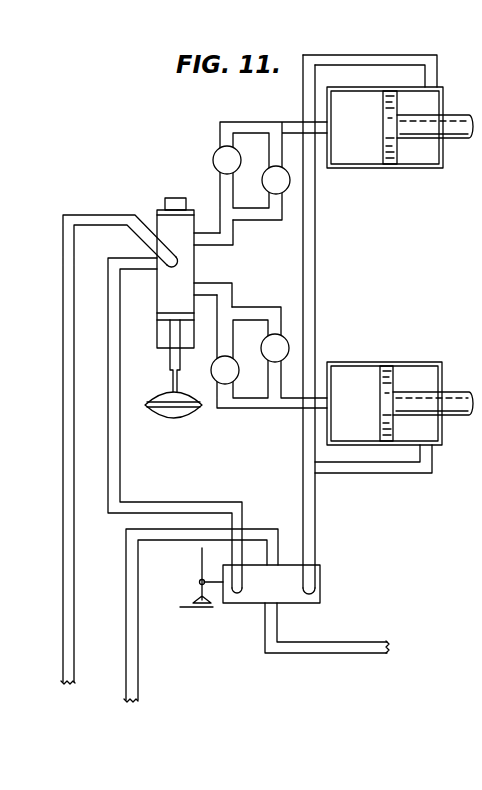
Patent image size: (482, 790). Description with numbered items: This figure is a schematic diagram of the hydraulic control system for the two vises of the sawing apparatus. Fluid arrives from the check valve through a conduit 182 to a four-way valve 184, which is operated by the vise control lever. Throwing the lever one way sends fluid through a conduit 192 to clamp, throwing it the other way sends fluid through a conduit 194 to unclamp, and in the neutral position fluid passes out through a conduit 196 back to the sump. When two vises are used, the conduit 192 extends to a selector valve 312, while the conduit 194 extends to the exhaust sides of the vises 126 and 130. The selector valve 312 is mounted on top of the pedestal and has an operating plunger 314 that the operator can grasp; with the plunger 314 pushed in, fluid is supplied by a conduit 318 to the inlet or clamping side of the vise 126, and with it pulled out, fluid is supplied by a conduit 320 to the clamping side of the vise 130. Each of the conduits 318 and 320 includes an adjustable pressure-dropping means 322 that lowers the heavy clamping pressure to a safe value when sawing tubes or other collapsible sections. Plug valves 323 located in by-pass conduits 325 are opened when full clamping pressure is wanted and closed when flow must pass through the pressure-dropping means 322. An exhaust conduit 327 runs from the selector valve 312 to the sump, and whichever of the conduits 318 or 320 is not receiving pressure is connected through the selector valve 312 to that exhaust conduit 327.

The vise 126 is at (420, 155).
The vise 130 is at (415, 377).
The conduit 182 is at (334, 652).
The four-way valve 184 is at (308, 594).
The conduit 192 is at (242, 515).
The conduit 194 is at (308, 512).
The conduit 196 is at (138, 691).
The selector valve 312 is at (186, 277).
The operating plunger 314 is at (180, 415).
The conduit 318 is at (257, 124).
The conduit 320 is at (289, 401).
The pressure-dropping means 322 is at (213, 163).
The plug valve 323 is at (280, 185).
The by-pass conduit 325 is at (272, 213).
The exhaust conduit 327 is at (61, 364).